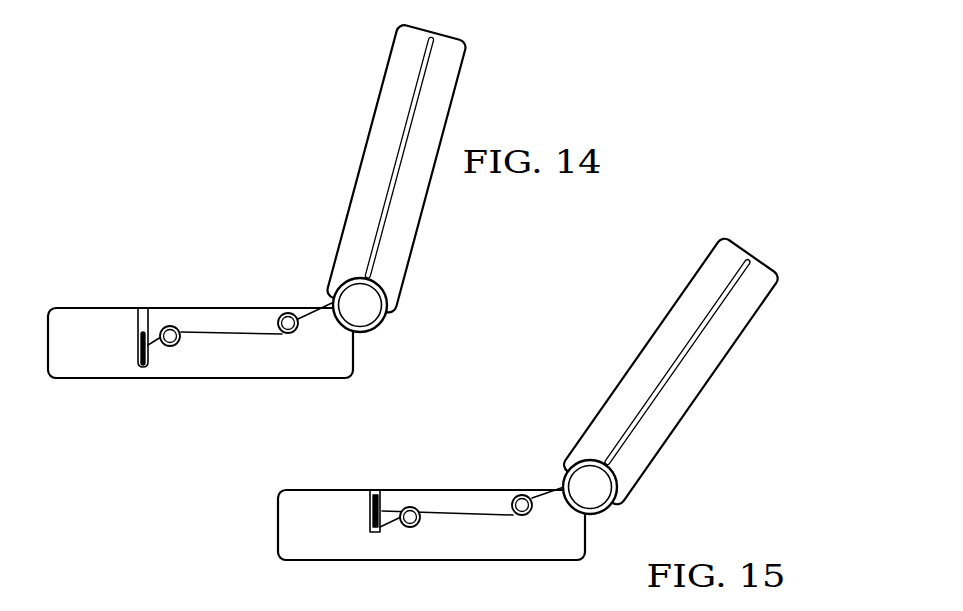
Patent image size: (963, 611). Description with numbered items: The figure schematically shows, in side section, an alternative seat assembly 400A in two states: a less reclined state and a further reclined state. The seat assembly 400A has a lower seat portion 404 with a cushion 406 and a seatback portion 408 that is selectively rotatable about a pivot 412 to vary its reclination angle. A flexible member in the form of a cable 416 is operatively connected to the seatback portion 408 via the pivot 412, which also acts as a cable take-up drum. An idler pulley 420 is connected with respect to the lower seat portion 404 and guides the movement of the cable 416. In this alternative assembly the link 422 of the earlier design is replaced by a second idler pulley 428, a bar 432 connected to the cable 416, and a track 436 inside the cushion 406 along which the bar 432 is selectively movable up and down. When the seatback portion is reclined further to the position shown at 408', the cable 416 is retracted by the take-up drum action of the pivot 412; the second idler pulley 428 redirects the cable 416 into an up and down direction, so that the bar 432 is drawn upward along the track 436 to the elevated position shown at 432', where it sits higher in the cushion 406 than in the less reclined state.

In FIG. 14, the seat assembly 400A is at (202, 140).
In FIG. 15, the seat assembly 400A is at (562, 342).
In FIG. 14, the lower seat portion 404 is at (68, 314).
In FIG. 15, the lower seat portion 404 is at (297, 498).
In FIG. 14, the cushion 406 is at (62, 342).
In FIG. 15, the cushion 406 is at (292, 528).
In FIG. 14, the seatback portion 408 is at (432, 163).
In FIG. 15, the seatback portion reclined position 408' is at (683, 358).
In FIG. 14, the pivot 412 is at (378, 328).
In FIG. 14, the cable 416 is at (238, 330).
In FIG. 15, the cable 416 is at (463, 510).
In FIG. 14, the idler pulley 420 is at (292, 313).
In FIG. 15, the idler pulley 420 is at (520, 495).
In FIG. 15, the link 422 is at (605, 513).
In FIG. 14, the second idler pulley 428 is at (170, 348).
In FIG. 15, the second idler pulley 428 is at (412, 528).
In FIG. 14, the bar 432 is at (116, 375).
In FIG. 15, the bar elevated position 432' is at (355, 473).
In FIG. 14, the track 436 is at (140, 320).
In FIG. 15, the track 436 is at (372, 525).